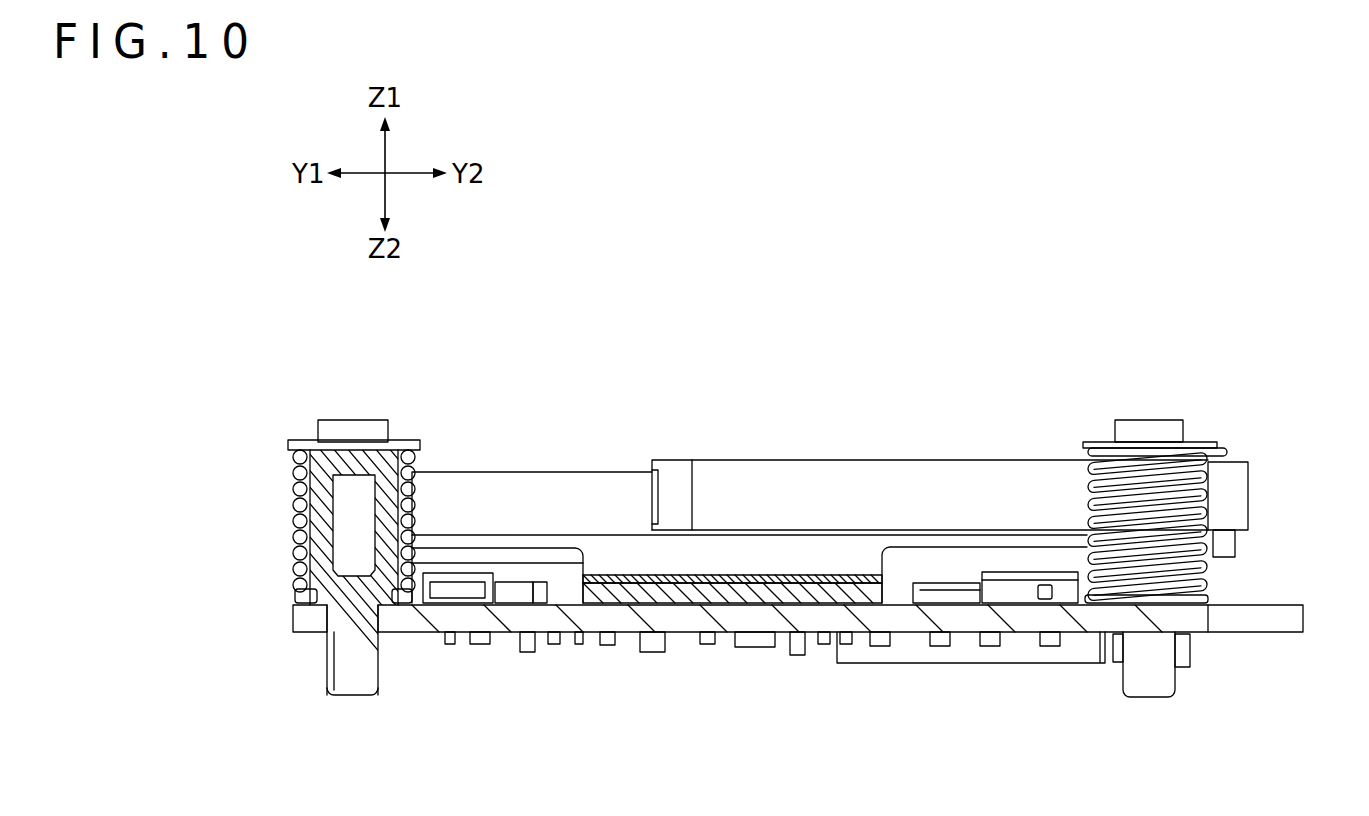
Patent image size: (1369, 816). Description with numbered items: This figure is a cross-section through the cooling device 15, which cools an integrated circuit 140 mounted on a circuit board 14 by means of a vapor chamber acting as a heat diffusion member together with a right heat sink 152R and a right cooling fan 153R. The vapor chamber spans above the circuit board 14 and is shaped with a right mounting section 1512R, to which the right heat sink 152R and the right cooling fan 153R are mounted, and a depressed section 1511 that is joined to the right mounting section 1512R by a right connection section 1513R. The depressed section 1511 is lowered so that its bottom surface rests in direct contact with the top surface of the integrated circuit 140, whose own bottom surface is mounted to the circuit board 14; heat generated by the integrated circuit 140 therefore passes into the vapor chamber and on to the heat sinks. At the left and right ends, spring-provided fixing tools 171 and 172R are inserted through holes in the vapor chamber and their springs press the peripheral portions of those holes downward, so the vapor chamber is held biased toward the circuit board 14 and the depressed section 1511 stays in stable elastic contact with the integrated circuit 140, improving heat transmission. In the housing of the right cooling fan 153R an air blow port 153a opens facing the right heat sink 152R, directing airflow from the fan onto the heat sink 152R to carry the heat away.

The circuit board 14 is at (1283, 602).
The cooling device 15 is at (732, 537).
The integrated circuit 140 is at (620, 597).
The fixing tool 171 is at (298, 513).
The fixing tool 172R is at (1207, 575).
The right heat sink 152R is at (582, 472).
The right cooling fan 153R is at (875, 460).
The air blow port 153a is at (650, 490).
The depressed section 1511 is at (795, 580).
The right mounting section 1512R is at (453, 535).
The right connection section 1513R is at (857, 557).